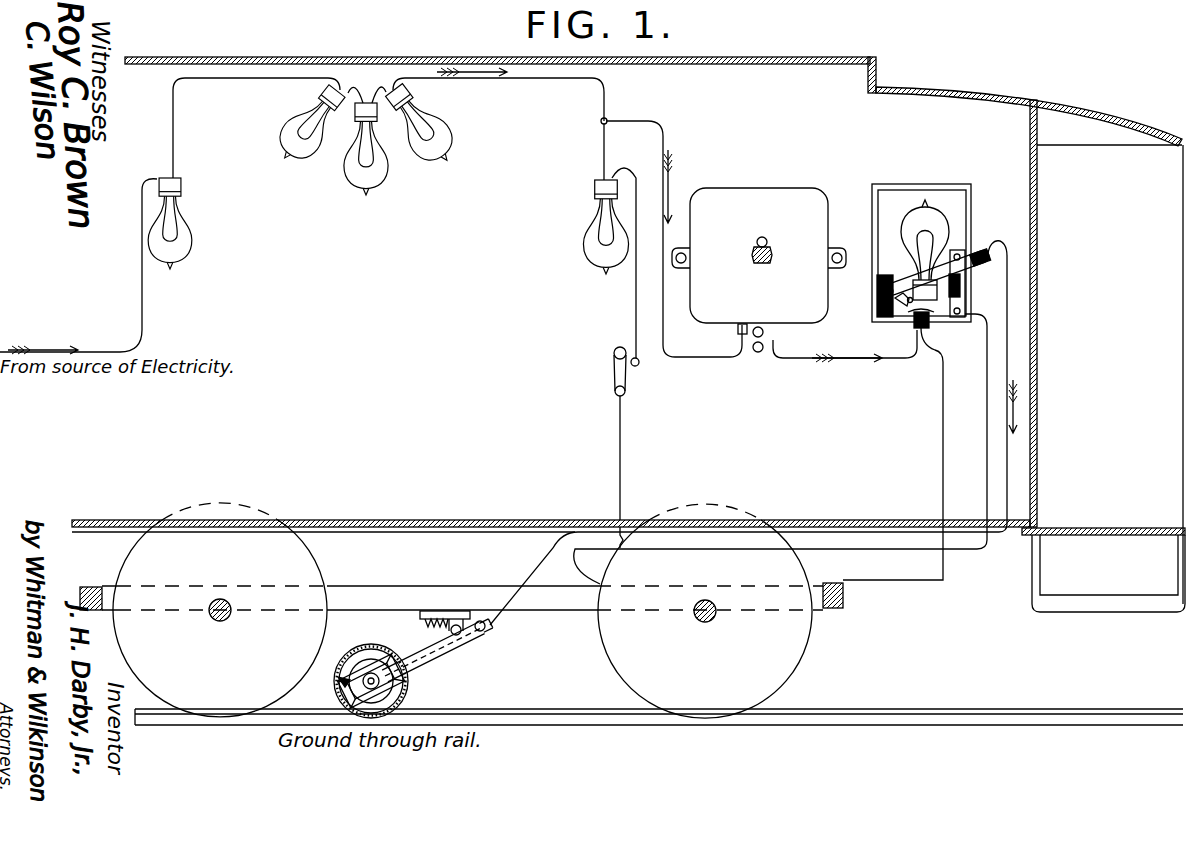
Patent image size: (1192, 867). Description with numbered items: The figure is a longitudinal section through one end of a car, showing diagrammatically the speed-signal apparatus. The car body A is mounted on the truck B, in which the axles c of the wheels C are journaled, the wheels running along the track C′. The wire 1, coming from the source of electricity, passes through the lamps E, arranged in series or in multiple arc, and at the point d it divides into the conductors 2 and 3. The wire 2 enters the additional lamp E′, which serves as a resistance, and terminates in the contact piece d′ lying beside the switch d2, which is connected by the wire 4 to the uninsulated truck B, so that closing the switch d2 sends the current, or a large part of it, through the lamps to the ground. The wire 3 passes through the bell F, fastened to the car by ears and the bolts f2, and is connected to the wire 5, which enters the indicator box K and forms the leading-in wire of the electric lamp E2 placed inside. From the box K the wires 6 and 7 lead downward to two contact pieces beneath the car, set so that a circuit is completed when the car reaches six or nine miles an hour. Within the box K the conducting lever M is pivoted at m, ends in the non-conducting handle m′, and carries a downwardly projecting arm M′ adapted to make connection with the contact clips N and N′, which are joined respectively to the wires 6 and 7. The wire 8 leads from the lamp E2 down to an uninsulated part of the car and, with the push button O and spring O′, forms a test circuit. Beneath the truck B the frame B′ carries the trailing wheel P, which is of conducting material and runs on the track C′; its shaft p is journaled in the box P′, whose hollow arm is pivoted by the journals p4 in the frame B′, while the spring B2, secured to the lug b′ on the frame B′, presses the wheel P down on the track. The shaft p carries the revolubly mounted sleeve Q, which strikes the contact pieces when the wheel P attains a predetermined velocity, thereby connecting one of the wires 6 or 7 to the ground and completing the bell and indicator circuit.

The wire 1 is at (302, 211).
The wire 2 is at (605, 241).
The wire 3 is at (674, 258).
The wire 4 is at (620, 468).
The wire 5 is at (845, 360).
The wire 6 is at (780, 449).
The wire 7 is at (1007, 322).
The wire 8 is at (943, 420).
The point d is at (607, 119).
The contact piece d′ is at (639, 365).
The switch d2 is at (613, 378).
The lamps E is at (185, 257).
The additional lamp E′ is at (592, 257).
The electric lamp E2 is at (938, 230).
The bell F is at (793, 198).
The bolts f2 is at (766, 238).
The indicator box K is at (921, 239).
The lever M is at (884, 282).
The pivot m is at (882, 293).
The downwardly projecting arm M′ is at (892, 314).
The non-conducting handle m′ is at (995, 256).
The contact clip N is at (962, 298).
The contact clip N′ is at (966, 274).
The push button O is at (914, 328).
The spring O′ is at (935, 354).
The car body A is at (628, 327).
The truck B is at (425, 612).
The lug b′ is at (436, 619).
The spring B2 is at (456, 624).
The frame B′ is at (470, 624).
The shaft p is at (355, 660).
The trailing wheel P is at (404, 690).
The box P′ is at (385, 664).
The journals p4 is at (450, 644).
The sleeve Q is at (340, 682).
The wheels C is at (461, 610).
The axles c is at (212, 618).
The track C′ is at (985, 712).